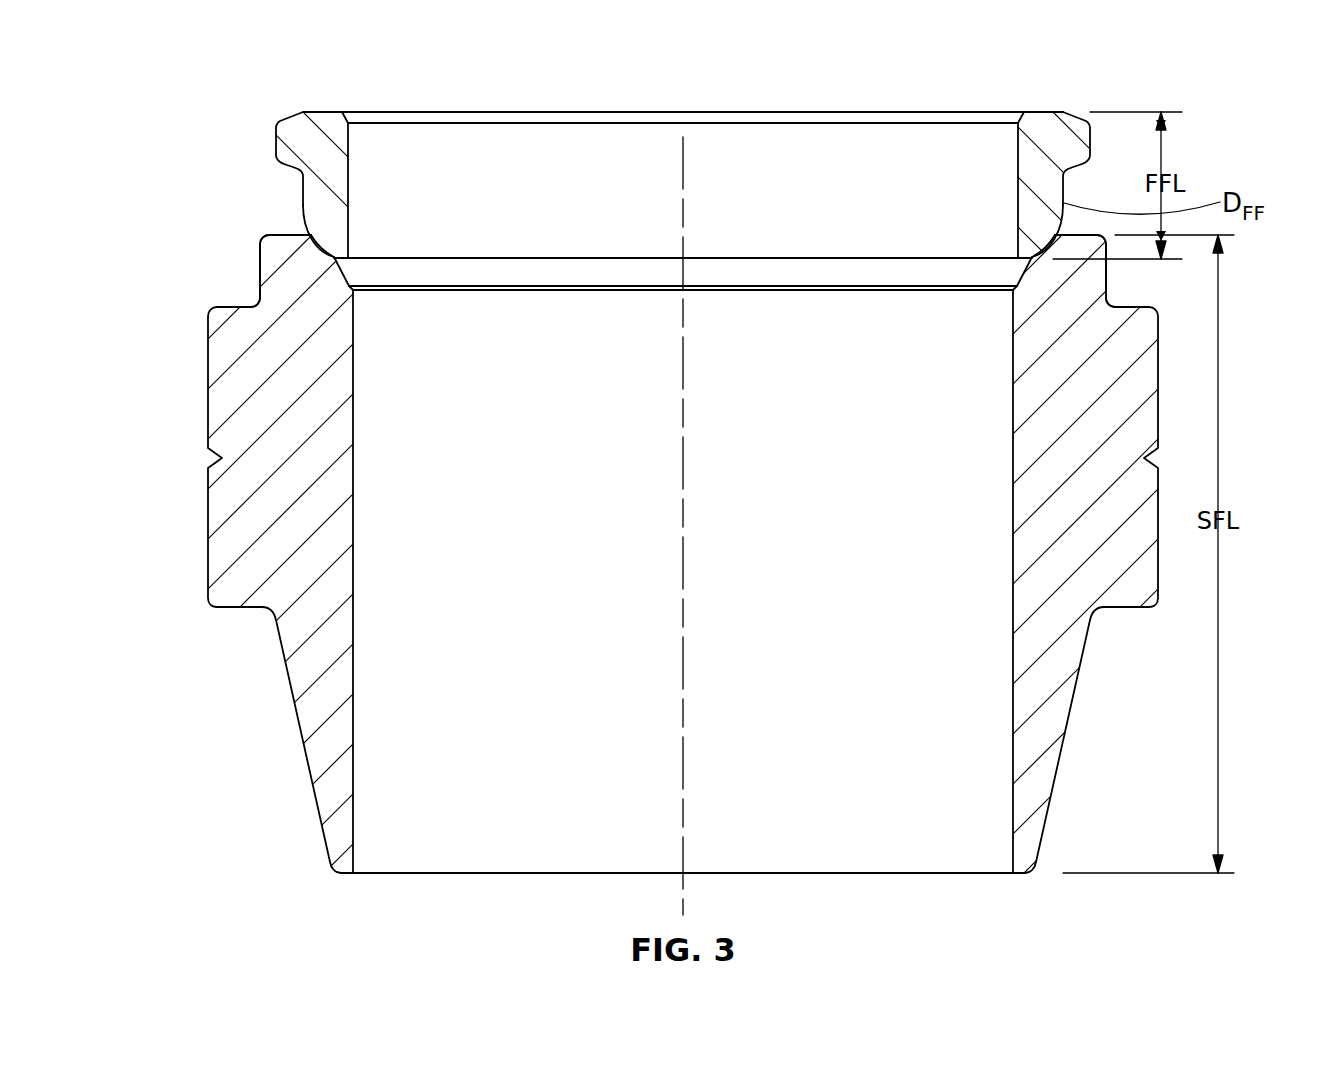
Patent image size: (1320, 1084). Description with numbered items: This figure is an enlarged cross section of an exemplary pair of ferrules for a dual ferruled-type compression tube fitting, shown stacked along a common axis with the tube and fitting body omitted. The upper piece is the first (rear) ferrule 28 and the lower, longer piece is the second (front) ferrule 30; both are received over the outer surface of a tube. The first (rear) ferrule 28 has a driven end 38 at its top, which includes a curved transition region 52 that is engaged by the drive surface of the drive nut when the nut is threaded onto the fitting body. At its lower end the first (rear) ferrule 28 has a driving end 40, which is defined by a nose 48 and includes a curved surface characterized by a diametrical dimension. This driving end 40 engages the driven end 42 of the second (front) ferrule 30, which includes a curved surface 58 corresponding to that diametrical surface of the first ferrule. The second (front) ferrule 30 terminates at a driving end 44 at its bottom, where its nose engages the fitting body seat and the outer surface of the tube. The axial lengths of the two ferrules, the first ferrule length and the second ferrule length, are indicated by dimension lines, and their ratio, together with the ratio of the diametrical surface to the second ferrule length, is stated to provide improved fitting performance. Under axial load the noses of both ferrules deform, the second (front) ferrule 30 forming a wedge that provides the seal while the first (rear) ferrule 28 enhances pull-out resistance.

The first ferrule 28 is at (276, 140).
The second ferrule 30 is at (210, 495).
The driven end 38 is at (323, 111).
The driving end 40 is at (338, 270).
The driven end 42 is at (284, 235).
The driving end 44 is at (335, 872).
The nose 48 is at (338, 260).
The curved transition region 52 is at (1073, 112).
The curved surface 58 is at (318, 254).